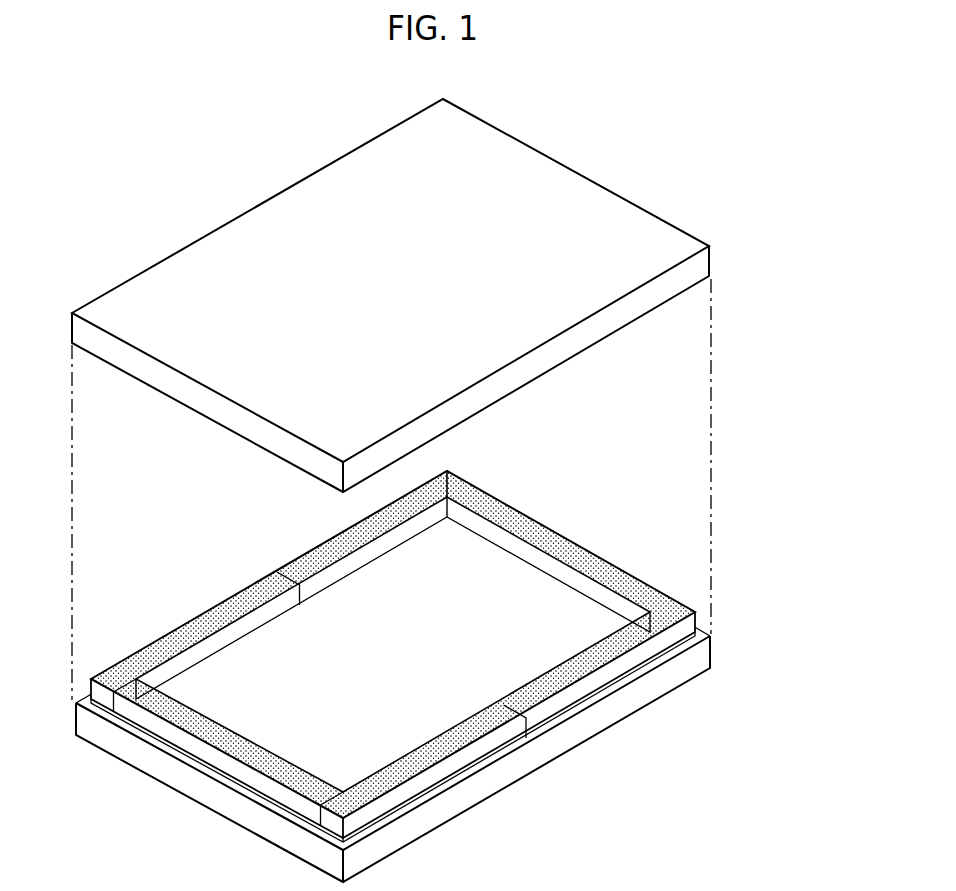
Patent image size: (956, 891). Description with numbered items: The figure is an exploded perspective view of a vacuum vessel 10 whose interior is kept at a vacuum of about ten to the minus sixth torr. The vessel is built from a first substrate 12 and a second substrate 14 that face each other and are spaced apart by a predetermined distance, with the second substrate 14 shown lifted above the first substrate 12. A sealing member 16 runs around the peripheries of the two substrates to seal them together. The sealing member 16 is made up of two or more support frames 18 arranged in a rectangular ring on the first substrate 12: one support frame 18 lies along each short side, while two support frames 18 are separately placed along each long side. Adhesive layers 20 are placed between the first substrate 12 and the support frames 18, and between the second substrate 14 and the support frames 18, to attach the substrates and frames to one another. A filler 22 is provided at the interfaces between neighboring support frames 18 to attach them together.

The vacuum vessel 10 is at (738, 419).
The first substrate 12 is at (228, 811).
The second substrate 14 is at (237, 233).
The sealing member 16 is at (393, 639).
The support frame 18 is at (472, 758).
The adhesive layer 20 is at (187, 747).
The filler 22 is at (472, 484).